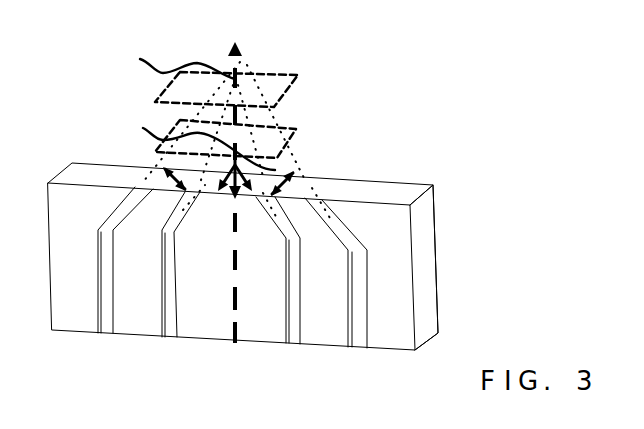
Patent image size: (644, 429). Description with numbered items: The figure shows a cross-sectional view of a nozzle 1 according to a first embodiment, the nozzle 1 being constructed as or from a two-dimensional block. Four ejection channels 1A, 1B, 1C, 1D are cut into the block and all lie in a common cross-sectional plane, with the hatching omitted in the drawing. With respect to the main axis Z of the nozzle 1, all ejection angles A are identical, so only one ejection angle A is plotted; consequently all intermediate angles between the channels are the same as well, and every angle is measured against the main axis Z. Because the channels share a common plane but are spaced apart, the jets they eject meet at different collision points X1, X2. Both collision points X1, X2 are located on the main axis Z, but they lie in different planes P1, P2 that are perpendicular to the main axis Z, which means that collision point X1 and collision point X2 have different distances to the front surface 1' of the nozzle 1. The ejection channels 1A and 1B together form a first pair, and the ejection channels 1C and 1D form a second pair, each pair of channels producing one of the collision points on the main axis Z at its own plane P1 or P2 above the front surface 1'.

The nozzle 1 is at (235, 194).
The front surface 1' is at (420, 228).
The ejection channel 1A is at (108, 325).
The ejection channel 1B is at (358, 340).
The ejection channel 1C is at (168, 328).
The ejection channel 1D is at (298, 337).
The ejection angle A is at (166, 170).
The collision point X1 is at (167, 58).
The collision point X2 is at (187, 139).
The plane P1 is at (285, 76).
The plane P2 is at (285, 130).
The main axis Z is at (275, 170).